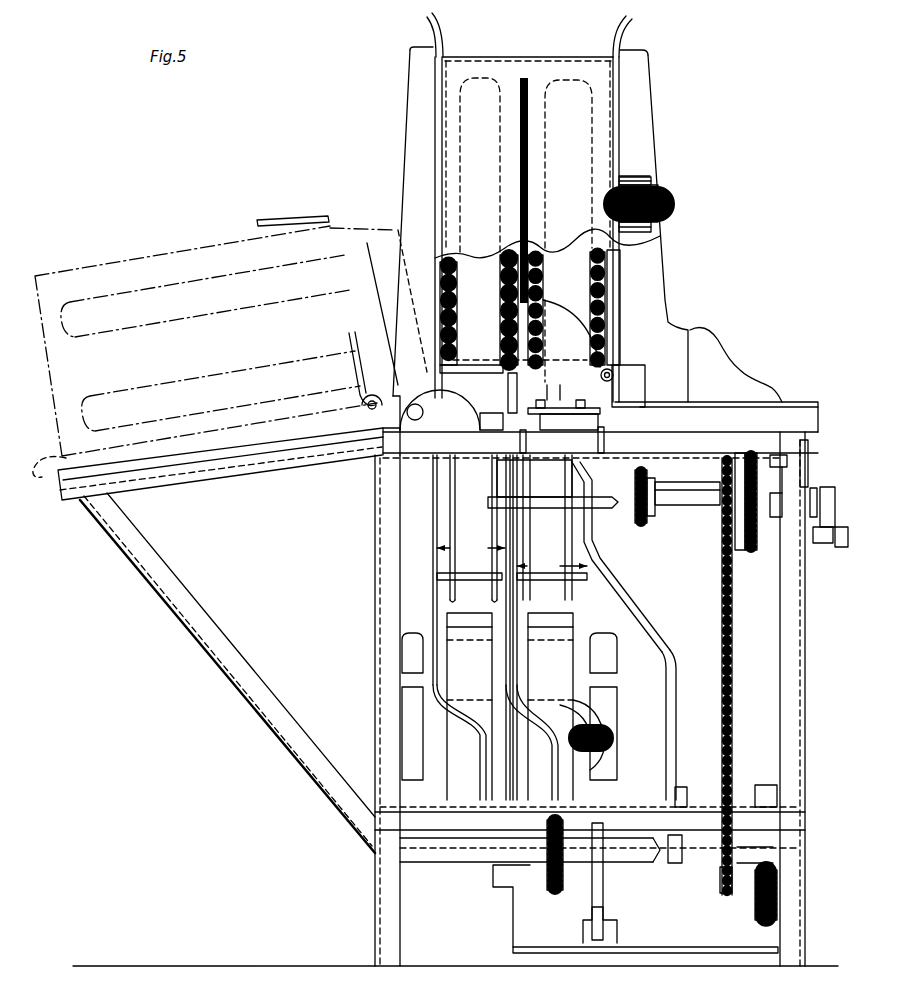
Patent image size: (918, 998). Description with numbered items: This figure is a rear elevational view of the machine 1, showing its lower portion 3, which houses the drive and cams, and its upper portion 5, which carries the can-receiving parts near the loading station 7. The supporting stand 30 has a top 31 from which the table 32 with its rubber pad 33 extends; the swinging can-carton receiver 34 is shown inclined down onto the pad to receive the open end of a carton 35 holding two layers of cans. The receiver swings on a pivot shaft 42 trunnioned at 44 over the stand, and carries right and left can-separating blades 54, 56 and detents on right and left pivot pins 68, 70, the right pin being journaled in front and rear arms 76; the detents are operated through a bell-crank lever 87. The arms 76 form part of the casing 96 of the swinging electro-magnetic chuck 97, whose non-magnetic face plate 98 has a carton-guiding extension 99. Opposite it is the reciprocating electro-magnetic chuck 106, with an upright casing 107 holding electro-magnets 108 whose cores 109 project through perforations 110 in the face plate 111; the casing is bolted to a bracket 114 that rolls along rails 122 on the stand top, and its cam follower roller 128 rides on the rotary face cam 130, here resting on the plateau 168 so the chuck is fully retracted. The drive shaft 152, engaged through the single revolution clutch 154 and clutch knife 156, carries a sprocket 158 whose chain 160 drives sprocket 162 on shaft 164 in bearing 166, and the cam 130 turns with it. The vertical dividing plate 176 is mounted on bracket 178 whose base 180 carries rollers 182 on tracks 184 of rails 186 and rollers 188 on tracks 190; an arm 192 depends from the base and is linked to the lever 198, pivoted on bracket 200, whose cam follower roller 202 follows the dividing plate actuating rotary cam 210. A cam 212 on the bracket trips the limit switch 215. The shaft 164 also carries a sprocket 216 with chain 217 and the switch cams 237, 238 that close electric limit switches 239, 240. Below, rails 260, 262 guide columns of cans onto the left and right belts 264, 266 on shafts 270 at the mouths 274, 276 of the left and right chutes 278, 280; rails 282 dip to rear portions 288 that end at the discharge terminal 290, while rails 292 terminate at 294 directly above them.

The machine 1 is at (775, 130).
The lower portion 3 is at (813, 712).
The upper portion 5 is at (345, 131).
The loading station 7 is at (110, 593).
The supporting stand 30 is at (807, 660).
The top 31 is at (712, 432).
The table 32 is at (222, 480).
The rubber pad 33 is at (125, 495).
The swinging can-carton receiver 34 is at (402, 158).
The open-ended carton 35 is at (500, 56).
The pivot shaft 42 is at (380, 435).
The trunnion 44 is at (368, 410).
The right can-separating blades 54 is at (503, 95).
The left can-separating blades 56 is at (548, 92).
The right pivot pin 68 is at (428, 318).
The left pivot pin 70 is at (612, 368).
The front and rear arms 76 is at (409, 116).
The bell-crank lever 87 is at (530, 496).
The casing 96 is at (452, 400).
The swinging electro-magnetic chuck 97 is at (407, 80).
The non-magnetic face plate 98 is at (446, 53).
The carton-guiding extension 99 is at (437, 26).
The reciprocating electro-magnetic chuck 106 is at (650, 53).
The upright casing 107 is at (643, 103).
The electro-magnets 108 is at (658, 190).
The cores 109 is at (615, 207).
The perforations 110 is at (614, 195).
The non-magnetic face plate 111 is at (622, 168).
The bracket 114 is at (735, 363).
The rails 122 is at (826, 392).
The cam follower roller 128 is at (788, 445).
The rotary face cam 130 is at (745, 552).
The drive shaft 152 is at (750, 870).
The pin type single revolution clutch 154 is at (575, 880).
The clutch knife 156 is at (603, 888).
The sprocket 158 is at (722, 883).
The chain 160 is at (733, 735).
The sprocket 162 is at (722, 528).
The shaft 164 is at (775, 505).
The bearing 166 is at (672, 506).
The plateau 168 is at (777, 455).
The dividing plate 176 is at (535, 240).
The bracket 178 is at (545, 305).
The base 180 is at (563, 406).
The rollers 182 is at (550, 398).
The tracks 184 is at (610, 372).
The rails 186 is at (620, 395).
The rollers 188 is at (605, 425).
The tracks 190 is at (523, 430).
The arm 192 is at (585, 427).
The lever 198 is at (676, 718).
The bracket 200 is at (617, 925).
The cam follower roller 202 is at (678, 845).
The dividing plate actuating rotary cam 210 is at (683, 787).
The cam 212 is at (508, 346).
The limit switch 215 is at (508, 395).
The sprocket 216 is at (650, 476).
The chain 217 is at (633, 520).
The switch cam 237 is at (835, 490).
The switch cam 238 is at (814, 488).
The electric limit switch 239 is at (827, 555).
The electric limit switch 240 is at (830, 540).
The rail 260 is at (565, 548).
The rail 262 is at (492, 527).
The left belt 264 is at (550, 612).
The right belt 266 is at (470, 598).
The shafts 270 is at (598, 633).
The mouth 274 is at (605, 585).
The mouth 276 is at (433, 507).
The left chute 278 is at (552, 566).
The right chute 280 is at (471, 548).
The rails 282 is at (540, 660).
The rear portions 288 is at (525, 768).
The discharge terminal 290 is at (468, 752).
The rails 292 is at (462, 660).
The rear ends 294 is at (468, 765).